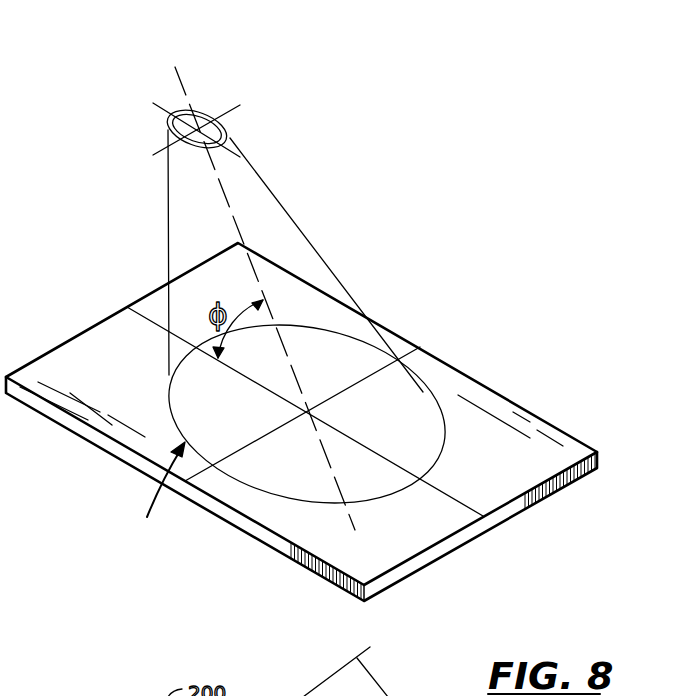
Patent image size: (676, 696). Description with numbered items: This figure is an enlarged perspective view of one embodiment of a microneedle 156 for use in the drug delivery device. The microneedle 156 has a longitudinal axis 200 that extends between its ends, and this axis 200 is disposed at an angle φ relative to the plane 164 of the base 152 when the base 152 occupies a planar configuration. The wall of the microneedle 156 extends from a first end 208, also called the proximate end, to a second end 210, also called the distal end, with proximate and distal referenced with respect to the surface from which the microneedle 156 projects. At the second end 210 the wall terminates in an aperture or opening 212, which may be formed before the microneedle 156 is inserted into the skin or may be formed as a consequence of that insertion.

The base 152 is at (480, 410).
The microneedle 156 is at (148, 493).
The plane 164 is at (478, 487).
The longitudinal axis 200 is at (181, 82).
The first end 208 is at (415, 413).
The second end 210 is at (228, 133).
The aperture or opening 212 is at (203, 118).